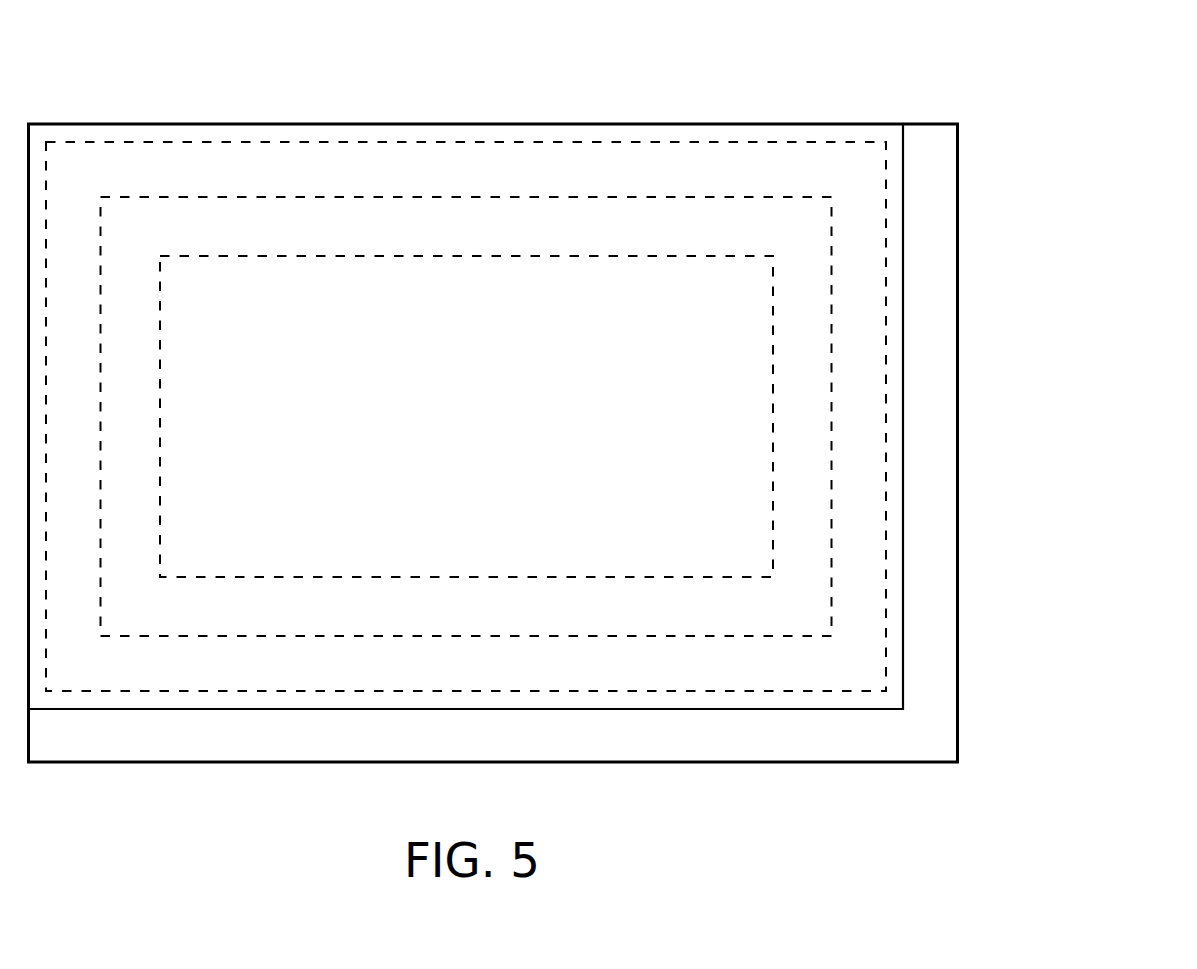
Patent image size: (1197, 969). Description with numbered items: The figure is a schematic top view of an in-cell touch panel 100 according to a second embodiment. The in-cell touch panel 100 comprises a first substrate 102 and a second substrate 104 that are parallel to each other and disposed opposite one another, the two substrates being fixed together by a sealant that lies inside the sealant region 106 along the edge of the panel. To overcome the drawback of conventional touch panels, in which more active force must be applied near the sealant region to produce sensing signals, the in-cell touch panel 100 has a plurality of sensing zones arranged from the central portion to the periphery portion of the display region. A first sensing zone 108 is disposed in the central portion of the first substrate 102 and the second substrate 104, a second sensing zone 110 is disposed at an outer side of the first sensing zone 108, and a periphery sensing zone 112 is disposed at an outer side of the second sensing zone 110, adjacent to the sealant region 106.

The in-cell touch panel 100 is at (1040, 110).
The first substrate 102 is at (903, 193).
The second substrate 104 is at (958, 270).
The sealant region 106 is at (895, 513).
The first sensing zone 108 is at (748, 349).
The second sensing zone 110 is at (810, 435).
The periphery sensing zone 112 is at (862, 618).